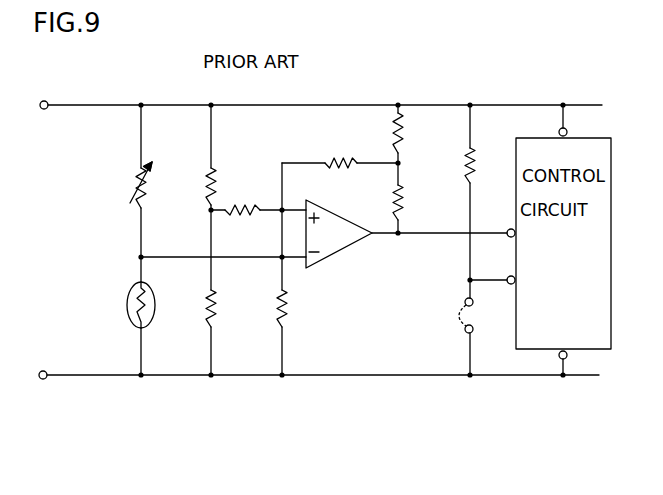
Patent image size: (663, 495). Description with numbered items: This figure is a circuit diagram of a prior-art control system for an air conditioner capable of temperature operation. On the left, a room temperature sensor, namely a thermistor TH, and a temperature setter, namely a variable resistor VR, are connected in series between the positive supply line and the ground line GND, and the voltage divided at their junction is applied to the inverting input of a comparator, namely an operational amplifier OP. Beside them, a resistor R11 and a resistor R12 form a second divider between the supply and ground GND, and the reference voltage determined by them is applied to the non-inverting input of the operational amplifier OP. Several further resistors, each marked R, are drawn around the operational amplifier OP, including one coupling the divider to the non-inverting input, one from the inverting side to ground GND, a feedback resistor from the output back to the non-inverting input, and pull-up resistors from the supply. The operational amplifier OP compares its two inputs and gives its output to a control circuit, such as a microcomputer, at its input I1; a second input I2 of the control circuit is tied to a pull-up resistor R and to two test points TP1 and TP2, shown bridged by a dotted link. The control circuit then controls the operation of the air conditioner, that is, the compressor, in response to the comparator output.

The ground terminal GND is at (319, 365).
The variable resistor VR is at (126, 185).
The thermistor TH is at (155, 305).
The resistor R11 is at (227, 186).
The resistor R12 is at (227, 308).
The resistor R is at (358, 220).
The operational amplifier OP is at (337, 244).
The control circuit input 1 I1 is at (521, 235).
The control circuit input 2 I2 is at (521, 282).
The test point 1 TP1 is at (484, 304).
The test point 2 TP2 is at (484, 332).